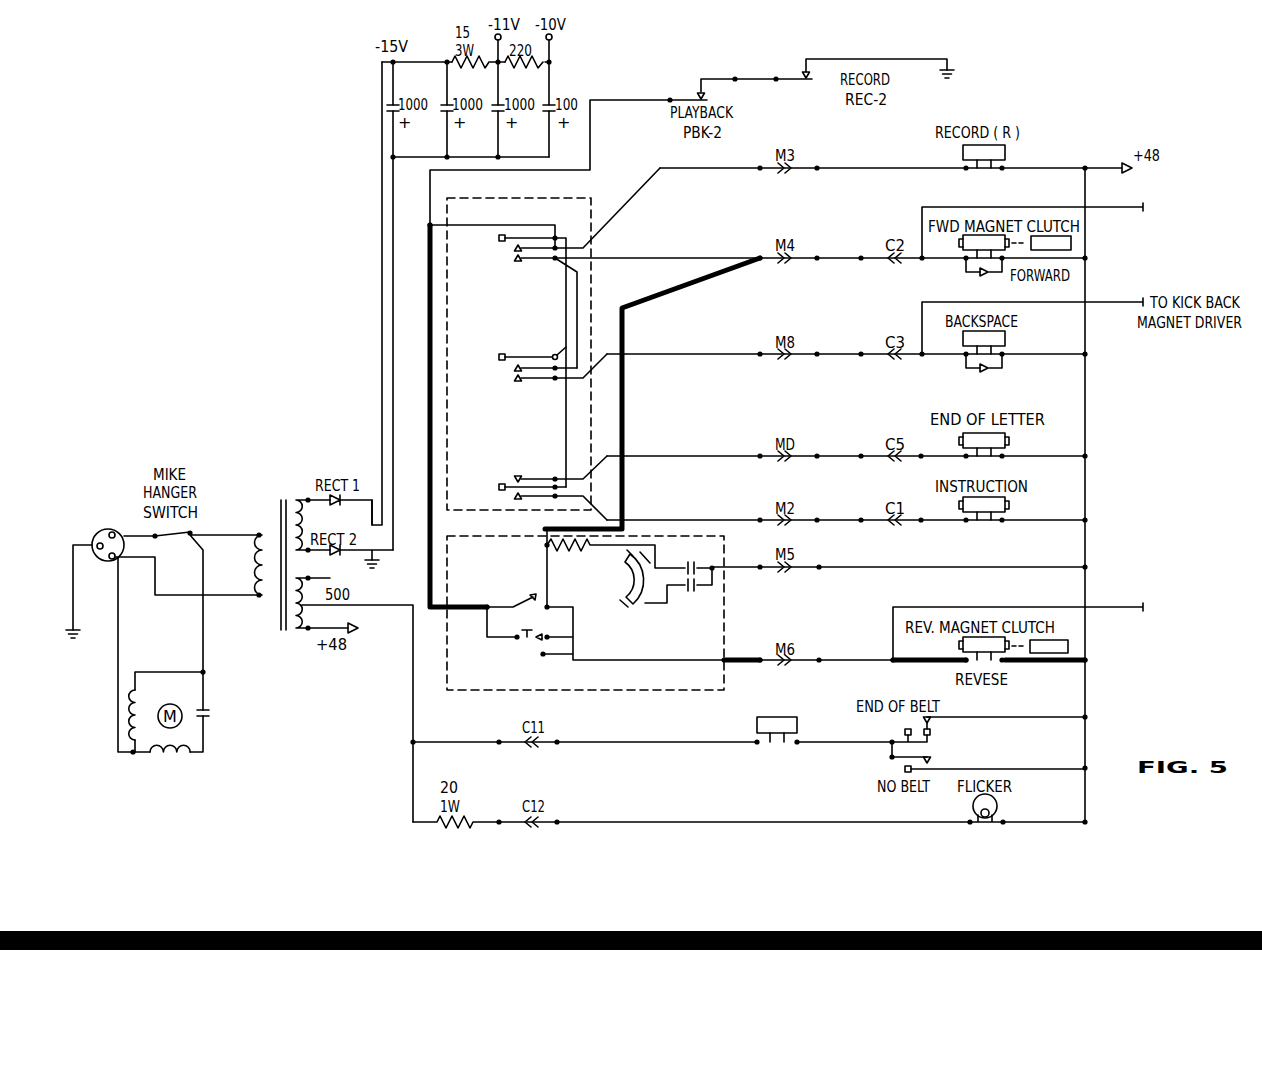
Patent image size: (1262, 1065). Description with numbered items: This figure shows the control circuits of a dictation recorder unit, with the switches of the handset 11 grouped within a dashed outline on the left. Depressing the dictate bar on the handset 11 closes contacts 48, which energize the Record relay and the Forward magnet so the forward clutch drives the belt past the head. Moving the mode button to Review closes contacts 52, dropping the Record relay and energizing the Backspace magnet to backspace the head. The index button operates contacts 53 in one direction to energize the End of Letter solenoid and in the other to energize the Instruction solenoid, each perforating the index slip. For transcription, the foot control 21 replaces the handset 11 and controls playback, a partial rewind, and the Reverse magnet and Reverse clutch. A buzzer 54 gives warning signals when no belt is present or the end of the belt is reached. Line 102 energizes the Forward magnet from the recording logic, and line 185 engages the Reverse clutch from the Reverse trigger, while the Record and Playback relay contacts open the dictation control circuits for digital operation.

The handset 11 is at (592, 207).
The contacts 48 is at (502, 255).
The contacts 52 is at (508, 380).
The contacts 53 is at (486, 487).
The foot control 21 is at (730, 618).
The buzzer 54 is at (800, 731).
The line 102 is at (1122, 207).
The line 185 is at (1105, 607).